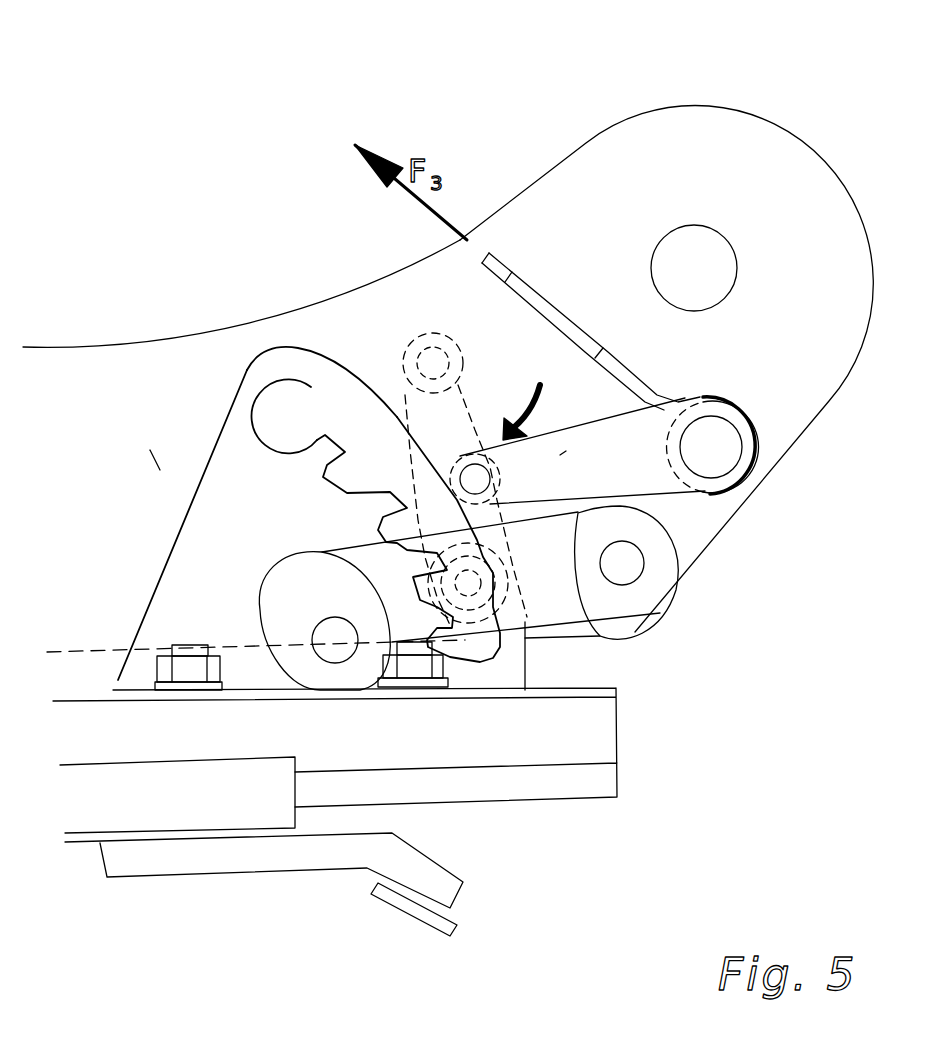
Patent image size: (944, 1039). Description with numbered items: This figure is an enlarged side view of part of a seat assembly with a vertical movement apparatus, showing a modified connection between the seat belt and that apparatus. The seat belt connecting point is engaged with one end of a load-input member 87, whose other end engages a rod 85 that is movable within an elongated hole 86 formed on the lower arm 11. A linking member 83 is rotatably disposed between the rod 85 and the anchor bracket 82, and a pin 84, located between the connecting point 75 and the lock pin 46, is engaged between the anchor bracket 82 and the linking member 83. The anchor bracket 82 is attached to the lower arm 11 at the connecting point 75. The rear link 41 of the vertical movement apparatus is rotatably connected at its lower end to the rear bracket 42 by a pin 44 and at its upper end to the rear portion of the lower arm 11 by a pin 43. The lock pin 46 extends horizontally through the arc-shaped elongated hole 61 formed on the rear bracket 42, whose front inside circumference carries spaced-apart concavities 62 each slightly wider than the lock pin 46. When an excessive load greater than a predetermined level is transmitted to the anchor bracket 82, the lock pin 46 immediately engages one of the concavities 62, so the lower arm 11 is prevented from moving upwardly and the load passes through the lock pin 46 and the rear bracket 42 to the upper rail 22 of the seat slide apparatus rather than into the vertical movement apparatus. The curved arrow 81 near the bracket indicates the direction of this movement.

The lower arm 11 is at (666, 326).
The upper rail 22 is at (563, 745).
The rear link 41 is at (547, 653).
The rear bracket 42 is at (307, 503).
The pin 43 is at (684, 608).
The pin 44 is at (380, 760).
The lock pin 46 is at (560, 695).
The elongated hole 61 is at (287, 294).
The concavities 62 is at (280, 359).
The connecting portion 75 is at (400, 296).
The spring 81 is at (143, 392).
The anchor bracket 82 is at (456, 384).
The linking member 83 is at (535, 272).
The pin 84 is at (381, 303).
The rod 85 is at (775, 476).
The elongated hole 86 is at (658, 513).
The load-input member 87 is at (591, 225).